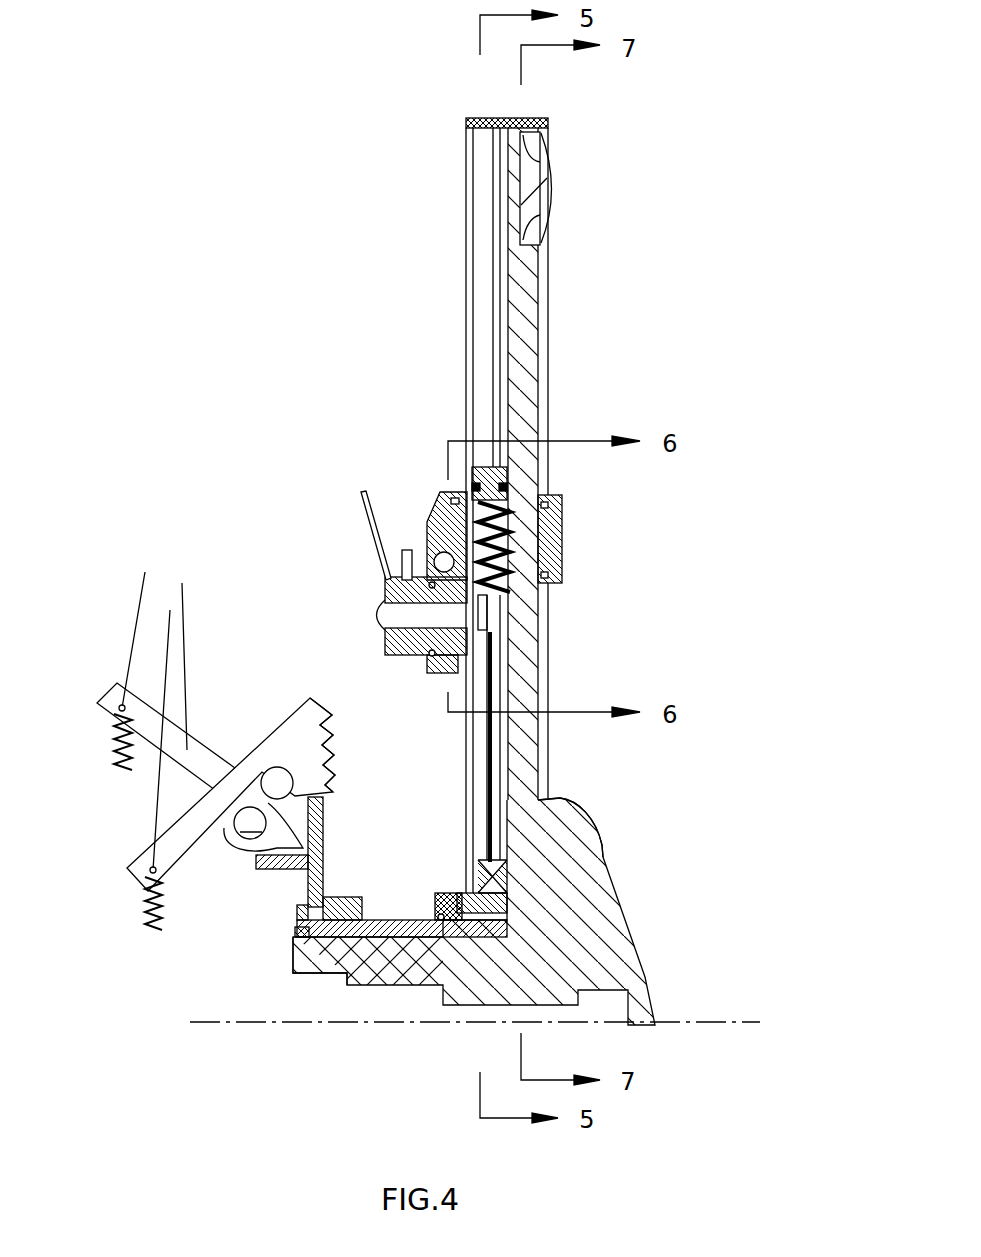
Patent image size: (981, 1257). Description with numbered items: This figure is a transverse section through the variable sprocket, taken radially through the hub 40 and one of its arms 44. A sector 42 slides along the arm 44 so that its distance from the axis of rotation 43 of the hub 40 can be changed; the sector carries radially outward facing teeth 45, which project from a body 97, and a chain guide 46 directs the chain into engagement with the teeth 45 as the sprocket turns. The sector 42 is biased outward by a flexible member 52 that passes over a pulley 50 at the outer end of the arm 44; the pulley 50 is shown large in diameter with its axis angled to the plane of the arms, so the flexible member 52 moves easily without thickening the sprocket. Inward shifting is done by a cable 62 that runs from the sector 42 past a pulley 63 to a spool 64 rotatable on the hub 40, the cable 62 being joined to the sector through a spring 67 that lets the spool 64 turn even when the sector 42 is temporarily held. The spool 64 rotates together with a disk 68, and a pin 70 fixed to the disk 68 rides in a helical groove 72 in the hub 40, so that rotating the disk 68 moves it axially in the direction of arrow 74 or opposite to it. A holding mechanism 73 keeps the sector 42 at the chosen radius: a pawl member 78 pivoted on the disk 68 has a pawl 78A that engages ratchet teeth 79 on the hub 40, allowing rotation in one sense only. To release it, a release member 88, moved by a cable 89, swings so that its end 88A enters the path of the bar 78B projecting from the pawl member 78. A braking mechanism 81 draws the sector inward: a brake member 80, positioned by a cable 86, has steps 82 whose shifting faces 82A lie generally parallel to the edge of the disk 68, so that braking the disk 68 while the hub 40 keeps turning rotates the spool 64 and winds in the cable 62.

The hub 40 is at (630, 923).
The sector 42 is at (563, 533).
The axis of rotation 43 is at (722, 1022).
The arm 44 is at (521, 292).
The teeth 45 is at (405, 553).
The chain guide 46 is at (363, 493).
The pulley 50 is at (555, 190).
The flexible member 52 is at (553, 362).
The cable 62 is at (552, 797).
The pulley 63 is at (470, 873).
The spool 64 is at (510, 897).
The spring 67 is at (508, 562).
The disk 68 is at (320, 823).
The pin 70 is at (395, 937).
The helical groove 72 is at (360, 973).
The holding mechanism 73 is at (200, 940).
The arrow 74 is at (188, 1098).
The pawl member 78 is at (352, 897).
The pawl 78A is at (302, 973).
The bar 78B is at (257, 863).
The ratchet teeth 79 is at (335, 973).
The brake member 80 is at (132, 873).
The braking mechanism 81 is at (250, 712).
The step 82 is at (338, 697).
The shifting face 82A is at (337, 730).
The cable 86 is at (215, 765).
The release member 88 is at (183, 585).
The end 88A is at (235, 832).
The cable 89 is at (140, 638).
The body 97 is at (393, 587).